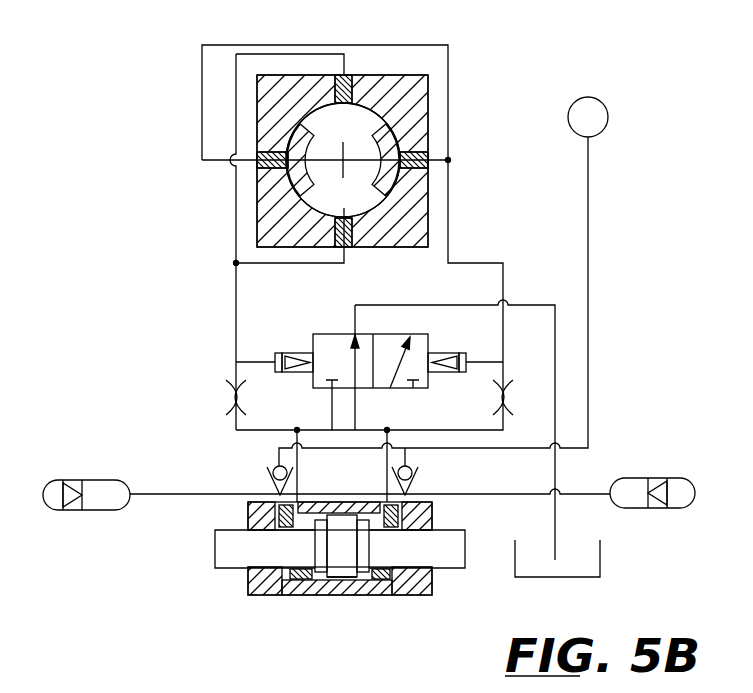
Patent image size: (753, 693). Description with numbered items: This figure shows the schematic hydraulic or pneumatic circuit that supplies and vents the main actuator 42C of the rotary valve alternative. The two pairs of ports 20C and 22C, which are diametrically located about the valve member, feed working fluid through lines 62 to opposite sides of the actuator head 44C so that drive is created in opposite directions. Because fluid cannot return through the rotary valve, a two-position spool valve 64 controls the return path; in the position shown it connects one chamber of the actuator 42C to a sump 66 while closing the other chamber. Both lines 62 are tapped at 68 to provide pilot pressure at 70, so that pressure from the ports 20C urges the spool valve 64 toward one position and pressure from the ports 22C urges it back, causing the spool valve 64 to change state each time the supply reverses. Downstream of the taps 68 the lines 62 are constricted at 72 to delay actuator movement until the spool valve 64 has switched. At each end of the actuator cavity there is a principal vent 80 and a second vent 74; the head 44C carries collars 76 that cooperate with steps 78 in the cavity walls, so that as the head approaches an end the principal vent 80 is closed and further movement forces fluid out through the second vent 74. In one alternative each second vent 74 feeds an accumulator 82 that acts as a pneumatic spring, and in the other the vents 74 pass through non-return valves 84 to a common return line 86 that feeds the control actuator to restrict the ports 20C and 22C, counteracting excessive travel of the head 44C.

The ports 20C is at (258, 164).
The ports 22C is at (346, 113).
The hydraulic or pneumatic lines 62 is at (236, 306).
The spool valve 64 is at (334, 321).
The sump 66 is at (600, 560).
The taps 68 is at (236, 362).
The pilot pressure 70 is at (257, 356).
The constrictions 72 is at (228, 399).
The second vent 74 is at (252, 521).
The collars 76 is at (356, 562).
The steps 78 is at (286, 593).
The principal vent 80 is at (383, 500).
The accumulator 82 is at (106, 481).
The non-return valves 84 is at (272, 488).
The common return line 86 is at (590, 294).
The main actuator 42C is at (350, 592).
The actuator head 44C is at (338, 580).